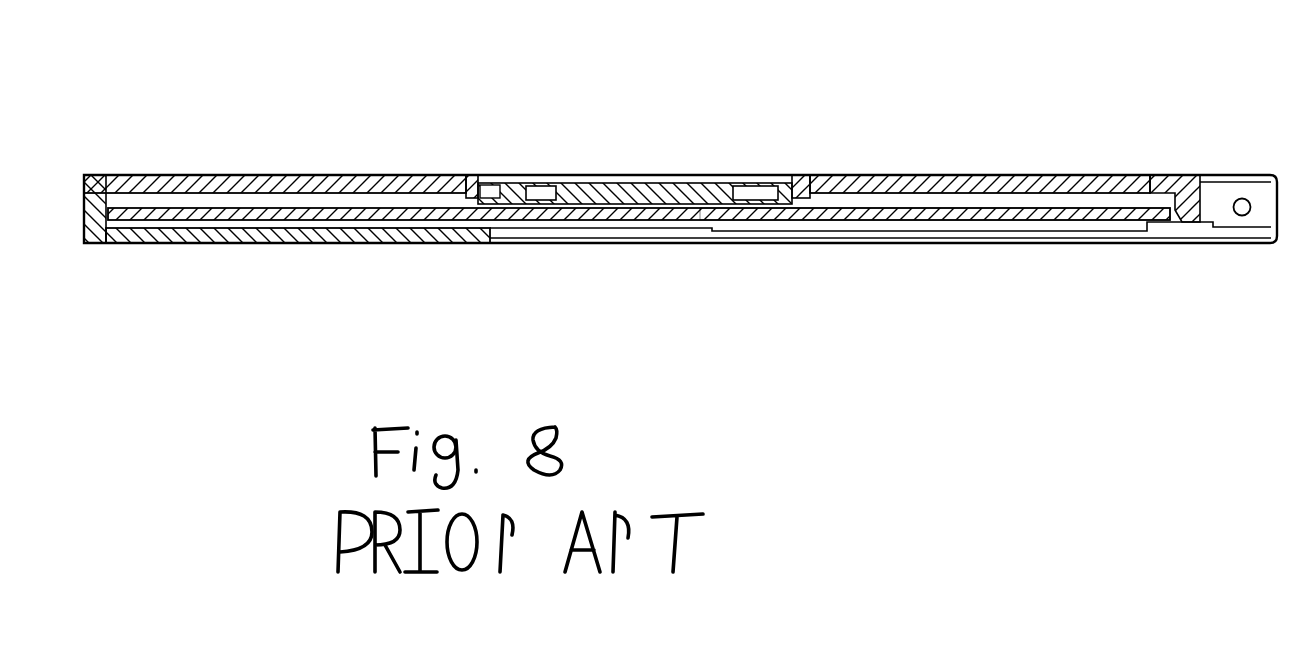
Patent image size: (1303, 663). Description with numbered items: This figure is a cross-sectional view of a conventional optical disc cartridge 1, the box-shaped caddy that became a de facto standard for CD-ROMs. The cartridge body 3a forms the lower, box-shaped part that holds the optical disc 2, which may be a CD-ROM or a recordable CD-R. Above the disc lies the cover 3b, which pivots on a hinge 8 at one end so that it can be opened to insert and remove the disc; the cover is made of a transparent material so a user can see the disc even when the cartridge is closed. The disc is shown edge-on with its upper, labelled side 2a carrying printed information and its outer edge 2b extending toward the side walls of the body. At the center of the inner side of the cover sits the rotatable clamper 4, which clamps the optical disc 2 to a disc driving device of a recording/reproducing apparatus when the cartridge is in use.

The optical disc cartridge 1 is at (1115, 138).
The optical disc 2 is at (689, 214).
The label 2a is at (985, 208).
The outer edge of the disc 2b is at (1033, 231).
The cartridge body 3a is at (338, 243).
The cover 3b is at (893, 175).
The clamper 4 is at (622, 176).
The hinge 8 is at (1242, 216).